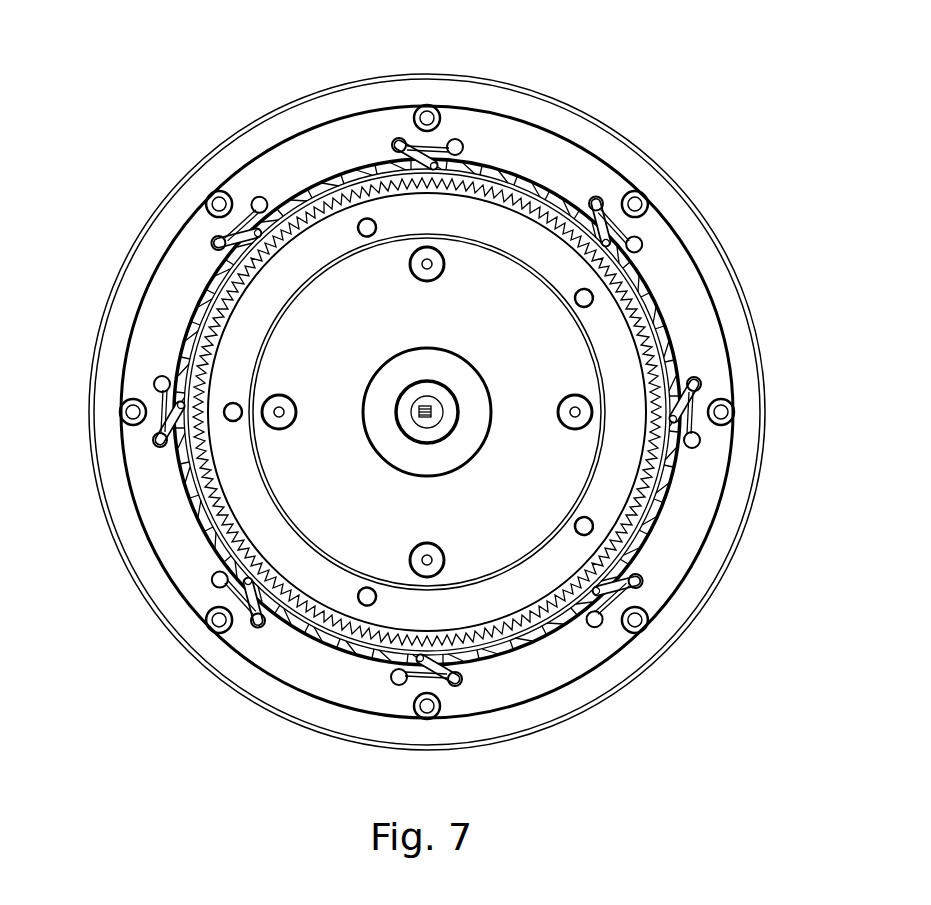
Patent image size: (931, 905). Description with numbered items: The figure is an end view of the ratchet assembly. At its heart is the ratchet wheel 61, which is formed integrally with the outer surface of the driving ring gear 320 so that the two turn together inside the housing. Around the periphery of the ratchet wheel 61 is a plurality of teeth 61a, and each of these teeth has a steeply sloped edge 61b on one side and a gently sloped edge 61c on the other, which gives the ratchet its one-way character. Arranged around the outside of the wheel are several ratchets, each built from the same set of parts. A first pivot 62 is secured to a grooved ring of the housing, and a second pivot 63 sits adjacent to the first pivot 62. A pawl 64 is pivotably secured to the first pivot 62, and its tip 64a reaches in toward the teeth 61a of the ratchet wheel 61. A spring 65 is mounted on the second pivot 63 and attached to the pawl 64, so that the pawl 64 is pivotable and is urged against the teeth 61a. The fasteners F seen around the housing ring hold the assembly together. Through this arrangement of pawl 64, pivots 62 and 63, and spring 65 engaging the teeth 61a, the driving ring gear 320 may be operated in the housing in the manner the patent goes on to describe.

The ratchet wheel 61 is at (670, 484).
The teeth 61a is at (673, 332).
The steeply sloped edge 61b is at (657, 322).
The gently sloped edge 61c is at (665, 312).
The driving ring gear 320 is at (205, 303).
The first pivot 62 is at (392, 145).
The second pivot 63 is at (462, 152).
The pawl 64 is at (410, 150).
The pawl lever tip 64a is at (436, 158).
The spring 65 is at (642, 243).
The fastener F is at (605, 215).